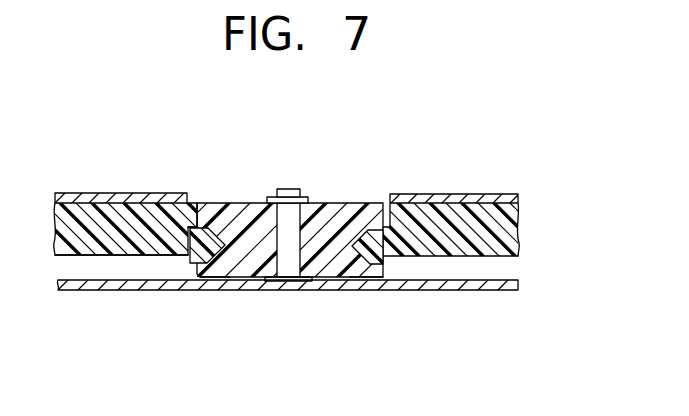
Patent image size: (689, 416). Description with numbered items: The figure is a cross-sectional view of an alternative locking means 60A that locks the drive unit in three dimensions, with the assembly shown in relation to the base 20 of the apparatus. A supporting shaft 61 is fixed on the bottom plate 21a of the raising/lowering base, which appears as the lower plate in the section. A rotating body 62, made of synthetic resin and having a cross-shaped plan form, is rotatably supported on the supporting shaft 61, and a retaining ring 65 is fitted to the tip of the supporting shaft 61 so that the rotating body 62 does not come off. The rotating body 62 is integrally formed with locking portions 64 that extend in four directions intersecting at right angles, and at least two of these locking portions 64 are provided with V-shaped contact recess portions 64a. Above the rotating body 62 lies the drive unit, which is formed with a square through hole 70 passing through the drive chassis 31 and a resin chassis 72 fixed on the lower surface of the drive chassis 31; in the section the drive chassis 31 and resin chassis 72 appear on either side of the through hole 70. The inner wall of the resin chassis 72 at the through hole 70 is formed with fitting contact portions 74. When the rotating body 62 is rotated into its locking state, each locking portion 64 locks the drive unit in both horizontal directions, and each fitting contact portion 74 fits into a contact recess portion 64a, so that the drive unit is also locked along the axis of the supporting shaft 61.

The circuit board 20 is at (550, 160).
The bottom plate 21a is at (138, 285).
The drive chassis 31 is at (130, 193).
The locking means 60A is at (432, 176).
The supporting shaft 61 is at (290, 262).
The rotating body 62 is at (412, 258).
The locking portion 64 is at (236, 222).
The contact recess portion 64a is at (227, 260).
The retaining ring 65 is at (290, 188).
The through hole 70 is at (198, 180).
The resin chassis 72 is at (89, 250).
The fitting contact portion 74 is at (192, 252).